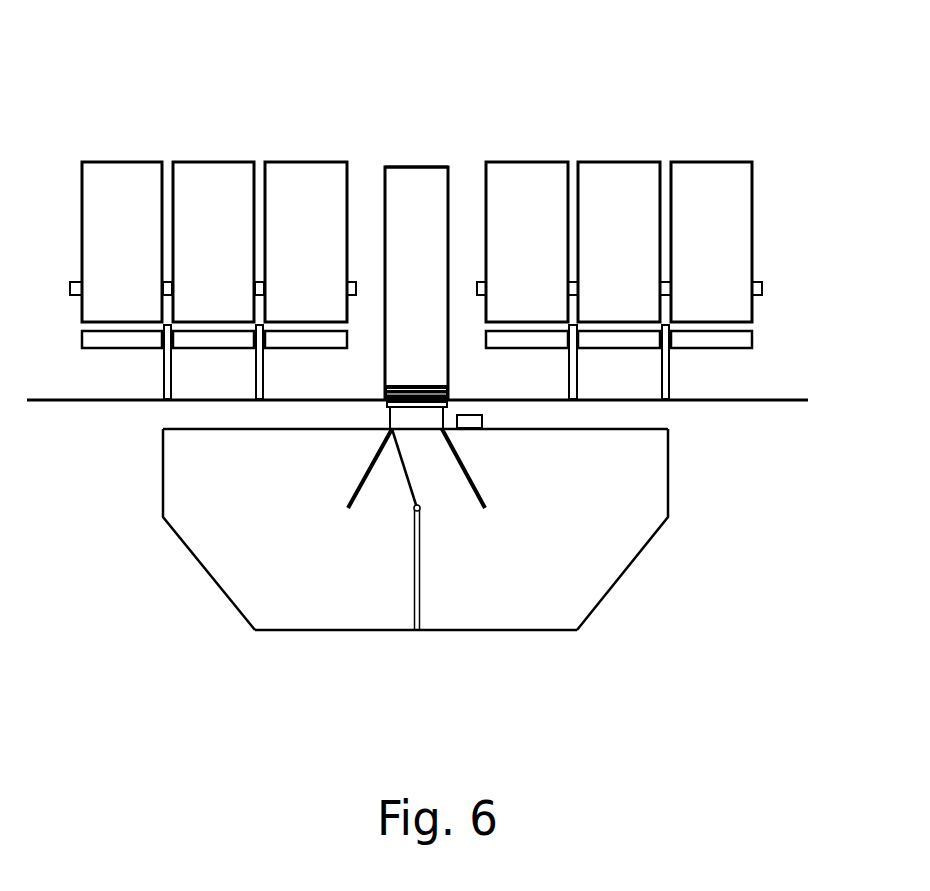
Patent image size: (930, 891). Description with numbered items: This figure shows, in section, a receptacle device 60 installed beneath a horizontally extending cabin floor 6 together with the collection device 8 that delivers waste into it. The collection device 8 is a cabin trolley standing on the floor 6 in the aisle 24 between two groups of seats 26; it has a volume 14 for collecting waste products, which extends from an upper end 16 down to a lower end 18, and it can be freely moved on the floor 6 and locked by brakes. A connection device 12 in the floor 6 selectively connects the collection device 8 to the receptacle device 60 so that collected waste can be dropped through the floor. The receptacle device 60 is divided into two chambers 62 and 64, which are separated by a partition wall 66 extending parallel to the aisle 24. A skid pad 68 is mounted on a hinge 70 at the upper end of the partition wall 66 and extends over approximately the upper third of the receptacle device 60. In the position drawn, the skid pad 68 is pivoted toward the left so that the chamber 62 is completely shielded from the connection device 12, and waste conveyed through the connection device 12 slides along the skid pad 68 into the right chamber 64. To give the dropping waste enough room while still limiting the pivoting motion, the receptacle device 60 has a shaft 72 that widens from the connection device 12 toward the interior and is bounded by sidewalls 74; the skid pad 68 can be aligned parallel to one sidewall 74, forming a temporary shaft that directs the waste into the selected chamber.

The cabin floor 6 is at (757, 398).
The collection device 8 is at (430, 265).
The connection device 12 is at (472, 408).
The volume 14 is at (400, 195).
The upper end 16 is at (418, 157).
The lower end 18 is at (378, 388).
The aisle 24 is at (462, 272).
The seats 26 is at (211, 145).
The receptacle device 60 is at (462, 531).
The chamber 62 is at (232, 567).
The chamber 64 is at (605, 565).
The partition wall 66 is at (422, 543).
The skid pad 68 is at (410, 480).
The hinge 70 is at (412, 510).
The shaft 72 is at (477, 458).
The sidewalls 74 is at (352, 490).